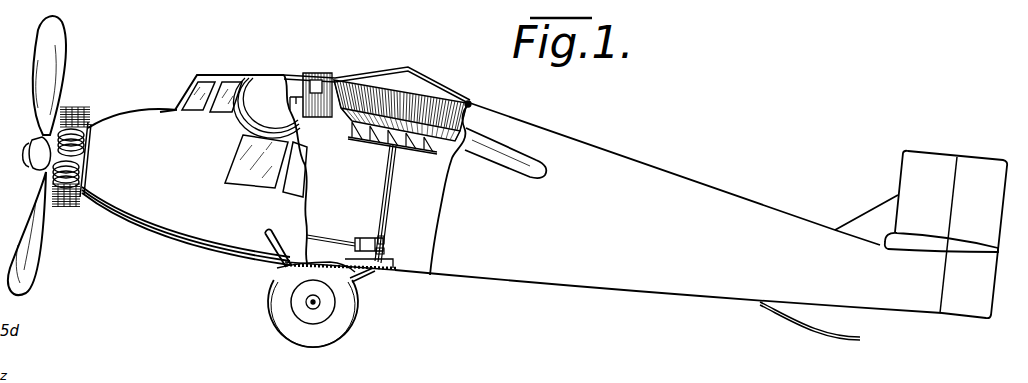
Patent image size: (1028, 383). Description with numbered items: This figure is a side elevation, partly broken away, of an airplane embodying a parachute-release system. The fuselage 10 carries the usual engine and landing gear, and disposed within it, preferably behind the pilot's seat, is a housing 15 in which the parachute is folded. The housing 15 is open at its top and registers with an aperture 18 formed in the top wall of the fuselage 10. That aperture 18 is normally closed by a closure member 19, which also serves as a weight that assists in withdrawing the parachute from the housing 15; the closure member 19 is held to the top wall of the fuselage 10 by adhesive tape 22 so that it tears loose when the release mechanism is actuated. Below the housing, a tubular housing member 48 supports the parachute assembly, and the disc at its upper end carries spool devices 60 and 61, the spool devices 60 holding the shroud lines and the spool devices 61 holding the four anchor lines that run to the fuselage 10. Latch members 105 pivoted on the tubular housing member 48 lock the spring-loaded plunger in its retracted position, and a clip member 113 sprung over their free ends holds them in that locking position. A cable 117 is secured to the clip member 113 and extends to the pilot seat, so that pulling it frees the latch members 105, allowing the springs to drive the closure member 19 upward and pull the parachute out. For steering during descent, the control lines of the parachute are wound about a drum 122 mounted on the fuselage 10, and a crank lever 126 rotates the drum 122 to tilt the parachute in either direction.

The fuselage 10 is at (613, 163).
The housing 15 is at (422, 113).
The aperture 18 is at (478, 112).
The closure member 19 is at (436, 70).
The adhesive tape 22 is at (470, 105).
The tubular housing member 48 is at (381, 218).
The spool devices 60 is at (430, 152).
The spool devices 61 is at (378, 141).
The latch members 105 is at (384, 240).
The clip member 113 is at (360, 238).
The cable 117 is at (326, 235).
The drum 122 is at (328, 115).
The crank lever 126 is at (262, 108).